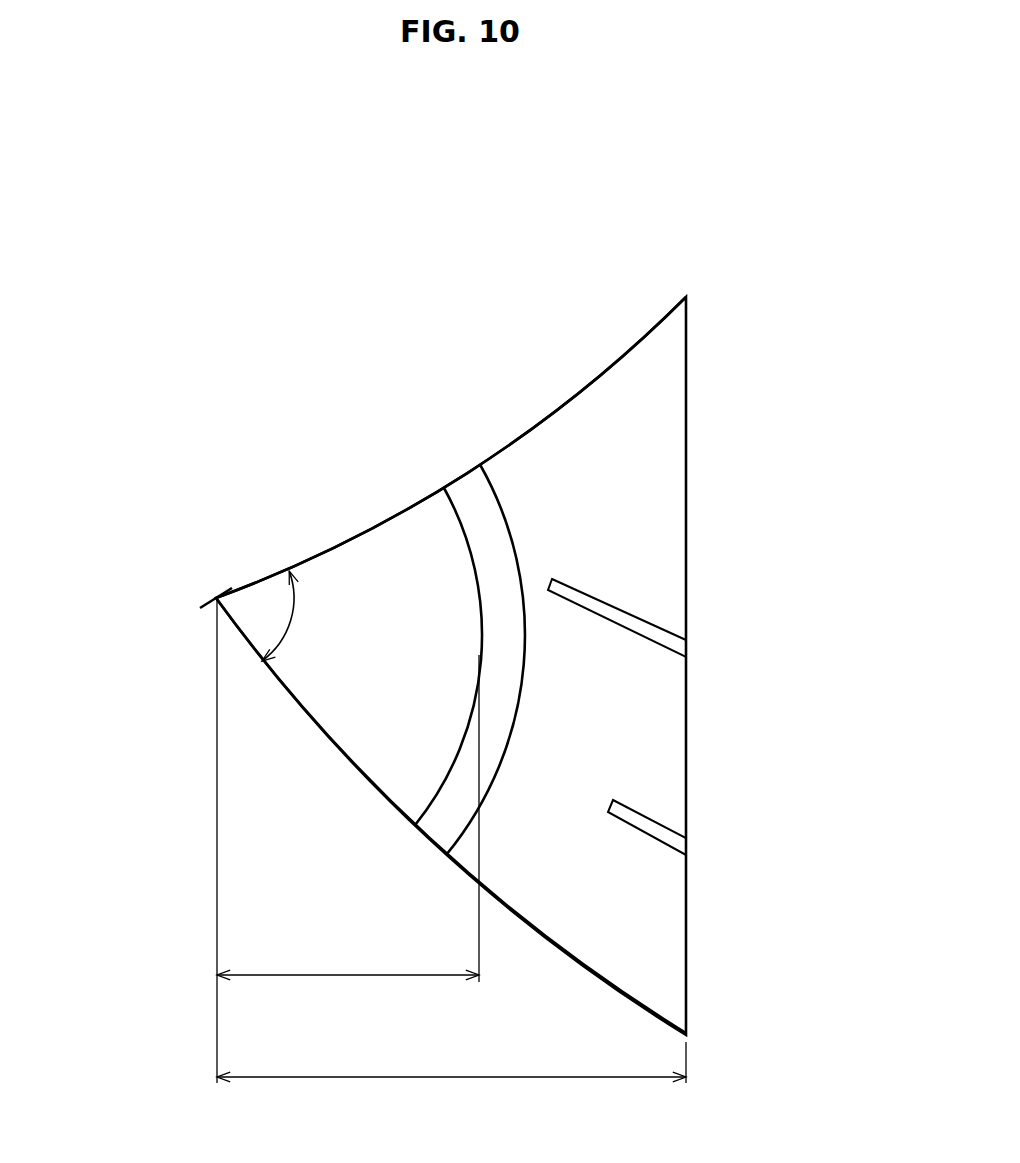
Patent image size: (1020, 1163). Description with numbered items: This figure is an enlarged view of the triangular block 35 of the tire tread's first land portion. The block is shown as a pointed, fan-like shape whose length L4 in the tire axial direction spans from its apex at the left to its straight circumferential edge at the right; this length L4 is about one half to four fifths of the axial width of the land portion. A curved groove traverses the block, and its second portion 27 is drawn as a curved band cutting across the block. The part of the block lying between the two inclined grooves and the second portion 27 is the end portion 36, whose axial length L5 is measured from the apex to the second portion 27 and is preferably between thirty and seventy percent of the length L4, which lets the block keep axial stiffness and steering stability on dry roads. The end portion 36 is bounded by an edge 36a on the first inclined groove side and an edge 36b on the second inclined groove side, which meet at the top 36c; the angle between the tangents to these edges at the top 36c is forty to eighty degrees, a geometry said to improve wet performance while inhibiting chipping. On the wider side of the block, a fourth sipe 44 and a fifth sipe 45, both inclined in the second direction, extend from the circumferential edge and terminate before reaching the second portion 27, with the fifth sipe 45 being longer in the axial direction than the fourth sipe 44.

The triangular block 35 is at (360, 493).
The end portion 36 is at (373, 672).
The edge on the first inclined groove side 36a is at (407, 507).
The edge on the second inclined groove side 36b is at (290, 693).
The top of the end portion 36c is at (216, 598).
The second portion 27 is at (488, 558).
The fourth sipe 44 is at (642, 823).
The fifth sipe 45 is at (622, 620).
The length in the tire axial direction of the end portion L5 is at (348, 840).
The length in the tire axial direction of the triangular block L4 is at (451, 1077).